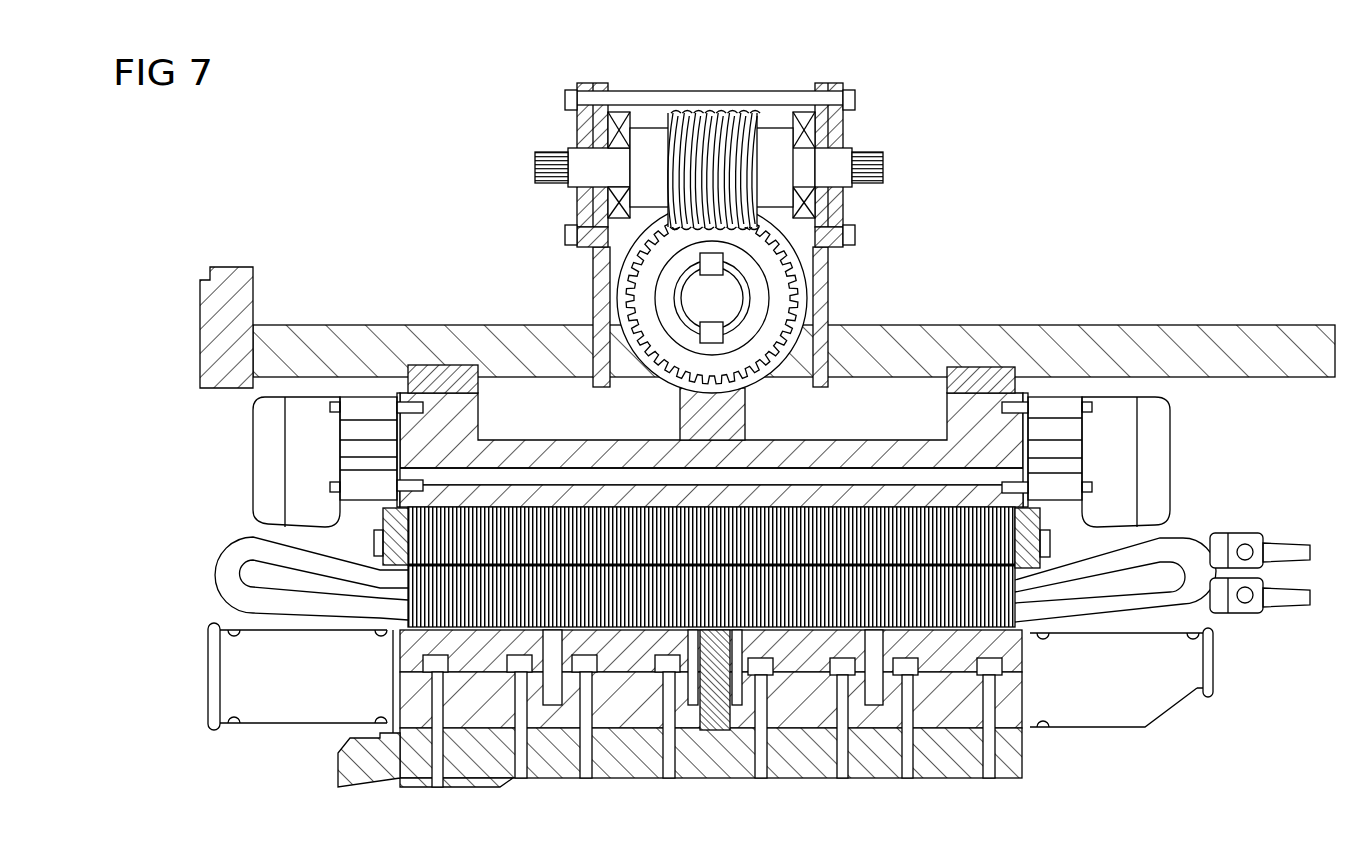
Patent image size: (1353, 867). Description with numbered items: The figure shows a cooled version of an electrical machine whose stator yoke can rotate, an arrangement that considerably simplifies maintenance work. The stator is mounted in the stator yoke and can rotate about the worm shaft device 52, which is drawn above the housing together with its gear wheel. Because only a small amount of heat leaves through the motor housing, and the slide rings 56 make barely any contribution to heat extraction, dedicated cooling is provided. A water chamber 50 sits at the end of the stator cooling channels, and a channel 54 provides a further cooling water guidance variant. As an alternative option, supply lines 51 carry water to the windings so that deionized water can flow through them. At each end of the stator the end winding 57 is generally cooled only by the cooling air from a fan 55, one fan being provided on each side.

The water chamber 50 is at (1153, 468).
The supply lines 51 is at (1235, 533).
The worm shaft device 52 is at (758, 295).
The channel 54 is at (860, 477).
The fan 55 is at (1137, 712).
The slide rings 56 is at (440, 368).
The end winding 57 is at (230, 568).